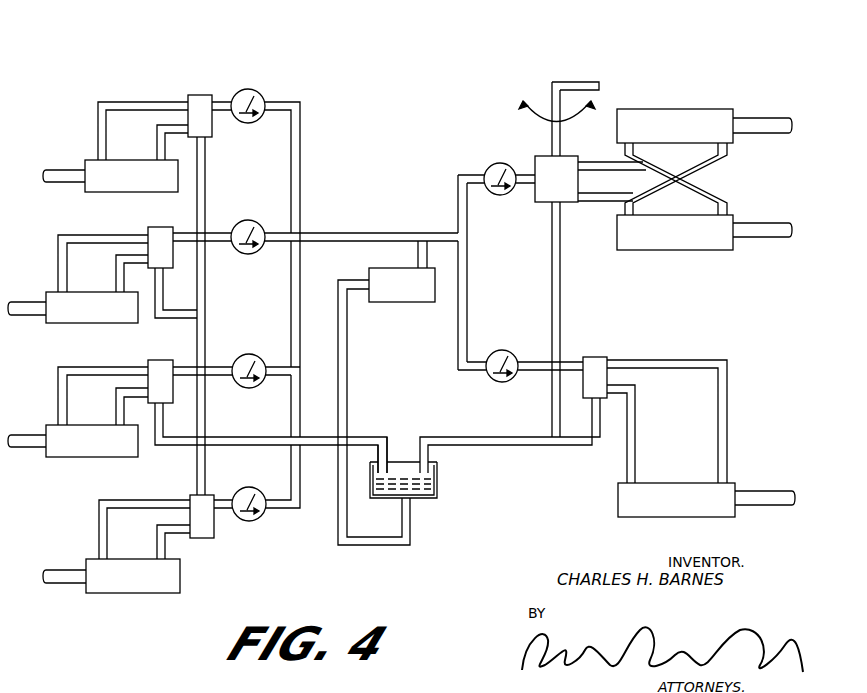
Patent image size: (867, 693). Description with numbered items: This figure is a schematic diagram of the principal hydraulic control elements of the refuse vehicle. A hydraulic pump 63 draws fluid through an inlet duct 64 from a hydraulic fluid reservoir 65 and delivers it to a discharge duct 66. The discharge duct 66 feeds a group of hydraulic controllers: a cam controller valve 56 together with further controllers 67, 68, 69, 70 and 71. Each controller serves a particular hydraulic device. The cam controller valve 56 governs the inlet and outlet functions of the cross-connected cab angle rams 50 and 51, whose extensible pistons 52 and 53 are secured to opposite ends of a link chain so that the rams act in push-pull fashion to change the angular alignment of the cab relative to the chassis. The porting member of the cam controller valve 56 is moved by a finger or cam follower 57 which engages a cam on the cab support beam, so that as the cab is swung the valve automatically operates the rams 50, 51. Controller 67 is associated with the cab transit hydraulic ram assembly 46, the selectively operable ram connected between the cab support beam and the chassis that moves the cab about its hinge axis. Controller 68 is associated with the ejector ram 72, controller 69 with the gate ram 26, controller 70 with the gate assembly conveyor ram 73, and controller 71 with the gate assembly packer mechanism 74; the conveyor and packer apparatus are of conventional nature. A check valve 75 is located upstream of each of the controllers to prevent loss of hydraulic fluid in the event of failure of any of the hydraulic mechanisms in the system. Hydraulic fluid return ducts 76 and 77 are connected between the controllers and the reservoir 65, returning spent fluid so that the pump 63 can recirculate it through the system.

The ejector ram 72 is at (92, 160).
The hydraulic controller 68 is at (203, 96).
The check valve 75 is at (262, 93).
The gate ram 26 is at (100, 292).
The hydraulic controller 69 is at (173, 256).
The hydraulic controller 70 is at (163, 360).
The gate assembly conveyor ram 73 is at (52, 425).
The gate assembly packer mechanism 74 is at (94, 559).
The hydraulic controller 71 is at (204, 538).
The discharge duct 66 is at (416, 252).
The hydraulic pump 63 is at (392, 302).
The inlet duct 64 is at (347, 378).
The hydraulic fluid return duct 76 is at (379, 437).
The hydraulic fluid return duct 77 is at (428, 437).
The hydraulic fluid reservoir 65 is at (437, 488).
The cam follower 57 is at (571, 82).
The cam controller valve 56 is at (545, 156).
The hydraulically operated ram 50 is at (662, 109).
The extensible piston 52 is at (752, 118).
The hydraulically operated ram 51 is at (655, 240).
The extensible piston 53 is at (758, 237).
The hydraulic controller 67 is at (597, 357).
The cab transit hydraulic ram assembly 46 is at (680, 483).